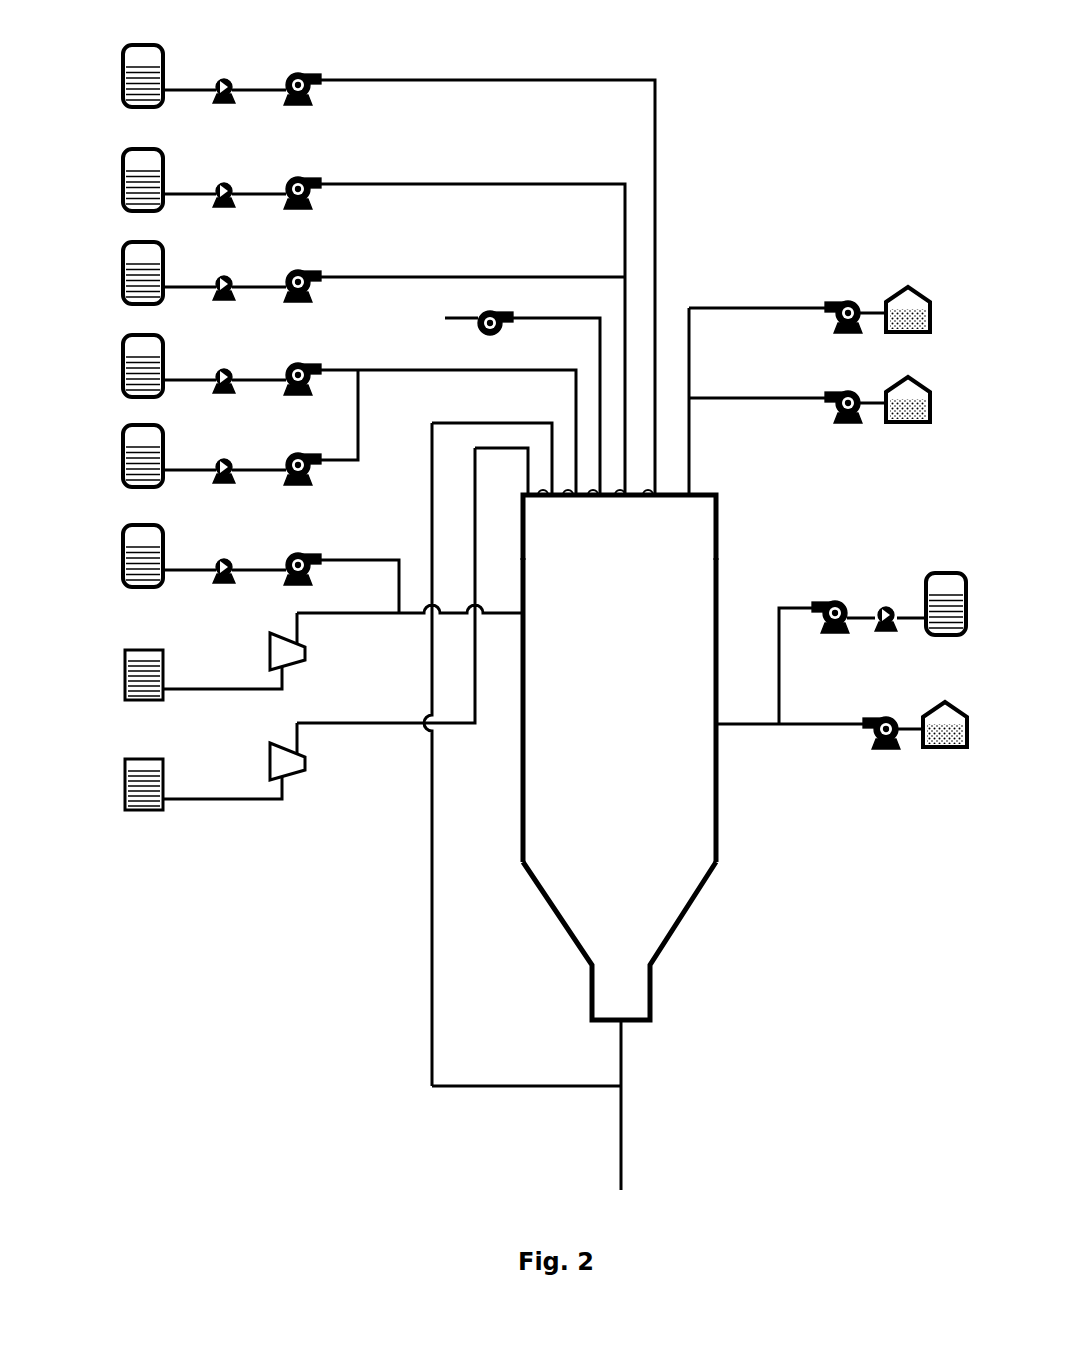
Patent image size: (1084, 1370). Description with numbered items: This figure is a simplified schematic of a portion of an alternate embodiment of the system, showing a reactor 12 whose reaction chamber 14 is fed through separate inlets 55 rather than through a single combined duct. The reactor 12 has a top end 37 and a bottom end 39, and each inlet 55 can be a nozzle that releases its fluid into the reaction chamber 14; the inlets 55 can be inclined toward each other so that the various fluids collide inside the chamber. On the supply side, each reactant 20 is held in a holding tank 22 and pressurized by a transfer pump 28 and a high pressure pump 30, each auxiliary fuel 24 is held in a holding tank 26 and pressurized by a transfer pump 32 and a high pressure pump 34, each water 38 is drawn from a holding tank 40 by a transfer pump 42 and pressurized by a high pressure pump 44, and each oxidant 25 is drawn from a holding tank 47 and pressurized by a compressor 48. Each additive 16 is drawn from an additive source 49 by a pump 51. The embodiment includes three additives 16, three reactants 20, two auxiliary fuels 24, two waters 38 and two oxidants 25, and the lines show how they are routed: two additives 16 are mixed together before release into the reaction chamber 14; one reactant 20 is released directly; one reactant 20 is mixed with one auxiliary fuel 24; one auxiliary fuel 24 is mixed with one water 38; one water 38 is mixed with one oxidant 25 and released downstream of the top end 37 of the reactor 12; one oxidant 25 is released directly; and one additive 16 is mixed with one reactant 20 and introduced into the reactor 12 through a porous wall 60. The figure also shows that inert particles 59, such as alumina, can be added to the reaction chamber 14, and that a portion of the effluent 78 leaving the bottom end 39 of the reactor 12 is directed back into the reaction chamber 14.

The reactor 12 is at (624, 757).
The reaction chamber 14 is at (687, 580).
The additive 16 is at (912, 314).
The reactant 20 is at (122, 100).
The holding tank 22 is at (140, 43).
The auxiliary fuel 24 is at (122, 298).
The oxidant 25 is at (125, 686).
The holding tank 26 is at (140, 241).
The transfer pump 28 is at (228, 80).
The high pressure pump 30 is at (308, 74).
The transfer pump 32 is at (228, 277).
The high pressure pump 34 is at (308, 271).
The top end 37 is at (716, 600).
The water 38 is at (122, 473).
The bottom end 39 is at (690, 902).
The holding tank 40 is at (140, 424).
The transfer pump 42 is at (228, 460).
The high pressure pump 44 is at (306, 453).
The holding tank 47 is at (142, 650).
The compressor 48 is at (267, 647).
The additive source 49 is at (895, 333).
The pump 51 is at (848, 302).
The inlet 55 is at (543, 498).
The inert particles 59 is at (502, 398).
The porous wall 60 is at (522, 778).
The effluent 78 is at (502, 1088).